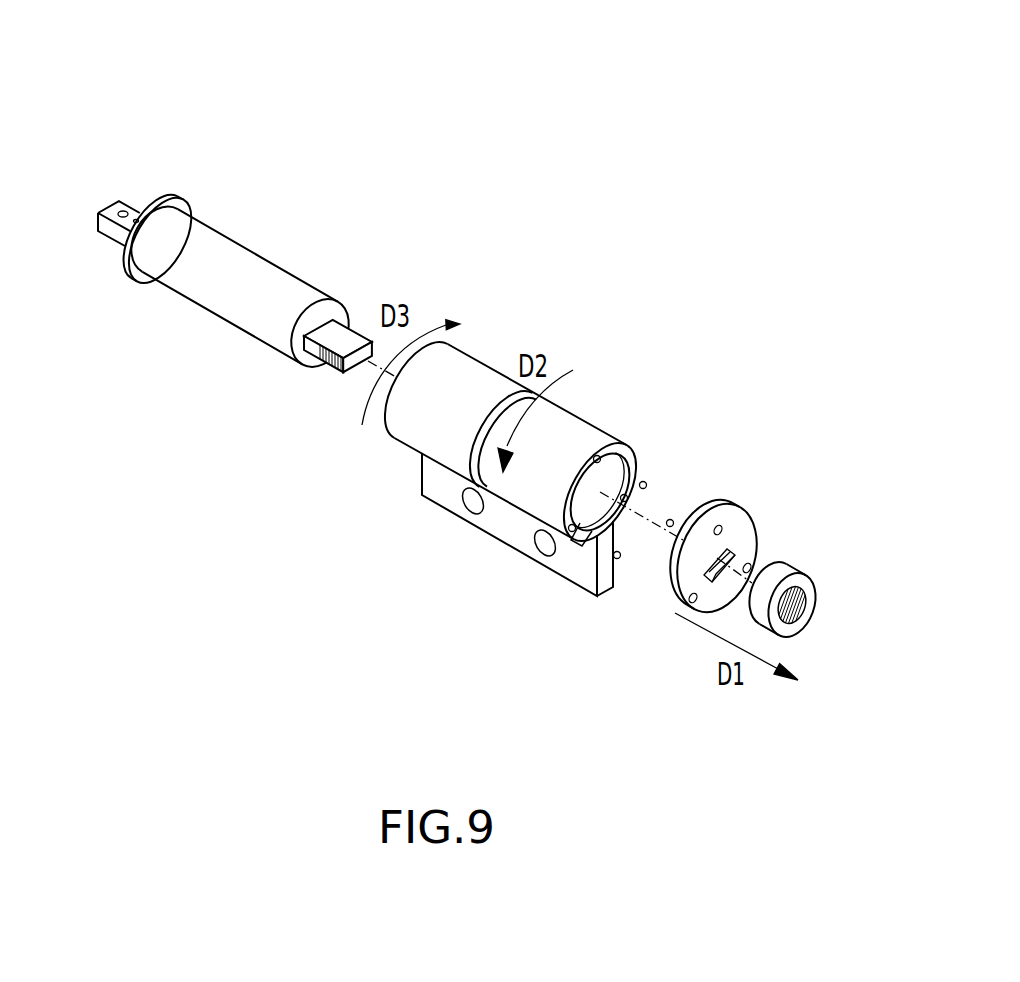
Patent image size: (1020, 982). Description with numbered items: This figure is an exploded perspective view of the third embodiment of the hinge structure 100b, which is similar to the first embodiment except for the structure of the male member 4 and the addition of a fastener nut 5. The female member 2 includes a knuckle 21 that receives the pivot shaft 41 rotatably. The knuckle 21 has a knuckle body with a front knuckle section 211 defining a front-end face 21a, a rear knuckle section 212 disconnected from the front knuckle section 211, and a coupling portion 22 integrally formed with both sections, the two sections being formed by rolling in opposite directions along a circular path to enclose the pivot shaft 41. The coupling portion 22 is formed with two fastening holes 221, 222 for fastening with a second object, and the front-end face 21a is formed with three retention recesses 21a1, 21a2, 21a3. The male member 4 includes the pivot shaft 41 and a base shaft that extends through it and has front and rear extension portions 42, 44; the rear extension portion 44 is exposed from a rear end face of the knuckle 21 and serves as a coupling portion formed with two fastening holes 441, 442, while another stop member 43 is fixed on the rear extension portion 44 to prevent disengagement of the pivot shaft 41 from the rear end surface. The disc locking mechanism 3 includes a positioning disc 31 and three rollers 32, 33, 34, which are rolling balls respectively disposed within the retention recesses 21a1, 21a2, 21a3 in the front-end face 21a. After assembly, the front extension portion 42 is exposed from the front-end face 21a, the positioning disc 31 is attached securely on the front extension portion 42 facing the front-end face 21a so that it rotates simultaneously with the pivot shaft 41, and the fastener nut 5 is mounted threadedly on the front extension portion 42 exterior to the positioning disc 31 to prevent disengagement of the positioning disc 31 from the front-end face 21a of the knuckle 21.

The hinge structure 100b is at (555, 111).
The female member 2 is at (688, 256).
The knuckle 21 is at (568, 302).
The front knuckle section 211 is at (562, 435).
The rear knuckle section 212 is at (467, 380).
The front-end face 21a is at (623, 453).
The retention recess 21a1 is at (570, 528).
The retention recess 21a2 is at (600, 452).
The retention recess 21a3 is at (640, 477).
The coupling portion 22 is at (440, 493).
The fastening hole 221 is at (547, 543).
The fastening hole 222 is at (470, 503).
The disc locking mechanism 3 is at (774, 465).
The positioning disc 31 is at (672, 585).
The roller 32 is at (617, 557).
The roller 33 is at (660, 493).
The roller 34 is at (747, 511).
The male member 4 is at (321, 166).
The pivot shaft 41 is at (227, 277).
The front extension portion 42 is at (337, 333).
The stop member 43 is at (183, 205).
The rear extension portion 44 is at (113, 232).
The fastening hole 441 is at (123, 211).
The fastening hole 442 is at (140, 217).
The fastener nut 5 is at (775, 570).